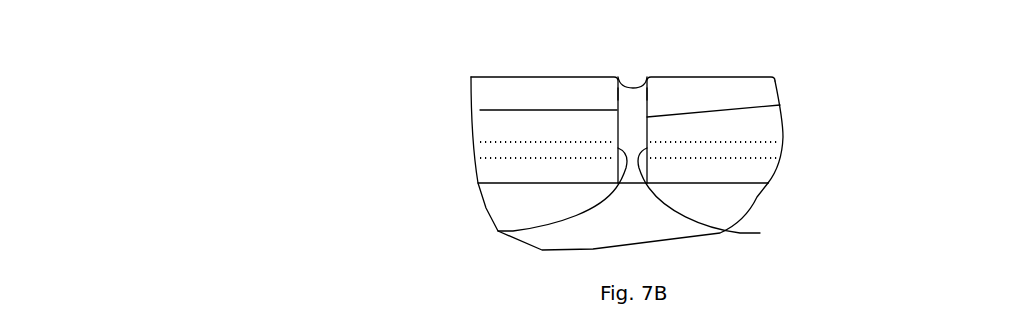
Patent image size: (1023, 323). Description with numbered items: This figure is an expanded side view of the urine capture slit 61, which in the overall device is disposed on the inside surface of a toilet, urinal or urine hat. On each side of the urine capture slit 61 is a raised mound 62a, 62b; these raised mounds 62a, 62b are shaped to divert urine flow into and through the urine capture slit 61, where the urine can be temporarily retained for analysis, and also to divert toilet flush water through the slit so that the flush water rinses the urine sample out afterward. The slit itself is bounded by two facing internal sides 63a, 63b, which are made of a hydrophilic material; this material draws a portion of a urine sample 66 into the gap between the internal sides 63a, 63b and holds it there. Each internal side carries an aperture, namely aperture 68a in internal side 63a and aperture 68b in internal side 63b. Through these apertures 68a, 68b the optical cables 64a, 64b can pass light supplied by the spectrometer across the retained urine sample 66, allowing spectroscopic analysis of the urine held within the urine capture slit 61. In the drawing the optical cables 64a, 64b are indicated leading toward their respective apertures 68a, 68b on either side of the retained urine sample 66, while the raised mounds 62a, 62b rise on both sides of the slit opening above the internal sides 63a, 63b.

The urine capture slit 61 is at (633, 66).
The raised mound 62a is at (490, 90).
The raised mound 62b is at (742, 92).
The internal side 63a is at (617, 110).
The internal side 63b is at (647, 117).
The optical cable 64a is at (500, 152).
The optical cable 64b is at (737, 150).
The urine sample 66 is at (633, 103).
The aperture 68a is at (498, 231).
The aperture 68b is at (720, 232).